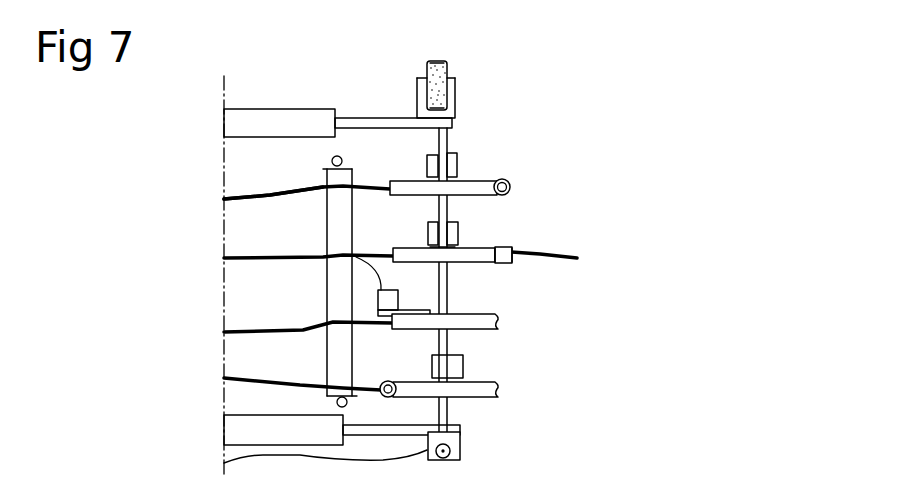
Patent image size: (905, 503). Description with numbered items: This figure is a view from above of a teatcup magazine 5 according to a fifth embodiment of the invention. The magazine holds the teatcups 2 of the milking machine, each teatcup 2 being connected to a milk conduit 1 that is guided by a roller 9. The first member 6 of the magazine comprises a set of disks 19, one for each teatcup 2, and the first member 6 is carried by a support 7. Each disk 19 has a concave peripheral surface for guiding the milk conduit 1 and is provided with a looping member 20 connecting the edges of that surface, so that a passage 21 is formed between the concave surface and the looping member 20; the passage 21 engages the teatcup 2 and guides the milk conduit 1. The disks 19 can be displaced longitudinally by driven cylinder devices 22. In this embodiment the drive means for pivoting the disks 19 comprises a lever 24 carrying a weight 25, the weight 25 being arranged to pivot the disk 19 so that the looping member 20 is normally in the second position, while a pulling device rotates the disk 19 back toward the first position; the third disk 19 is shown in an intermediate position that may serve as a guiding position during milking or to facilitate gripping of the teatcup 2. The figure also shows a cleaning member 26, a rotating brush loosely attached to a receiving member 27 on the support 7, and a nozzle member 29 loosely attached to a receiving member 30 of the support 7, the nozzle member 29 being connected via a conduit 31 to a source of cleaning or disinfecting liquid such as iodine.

The milk conduit 1 is at (234, 373).
The teatcup 2 is at (503, 179).
The teatcup magazine 5 is at (615, 170).
The first member 6 is at (480, 197).
The disk 19 is at (503, 255).
The support 7 is at (355, 118).
The roller 9 is at (328, 228).
The looping member 20 is at (507, 263).
The passage 21 is at (500, 264).
The cylinder device 22 is at (272, 122).
The lever 24 is at (439, 264).
The weight 25 is at (430, 163).
The cleaning member 26 is at (441, 62).
The receiving member 27 is at (452, 90).
The nozzle member 29 is at (443, 459).
The receiving member 30 is at (448, 437).
The conduit 31 is at (388, 461).